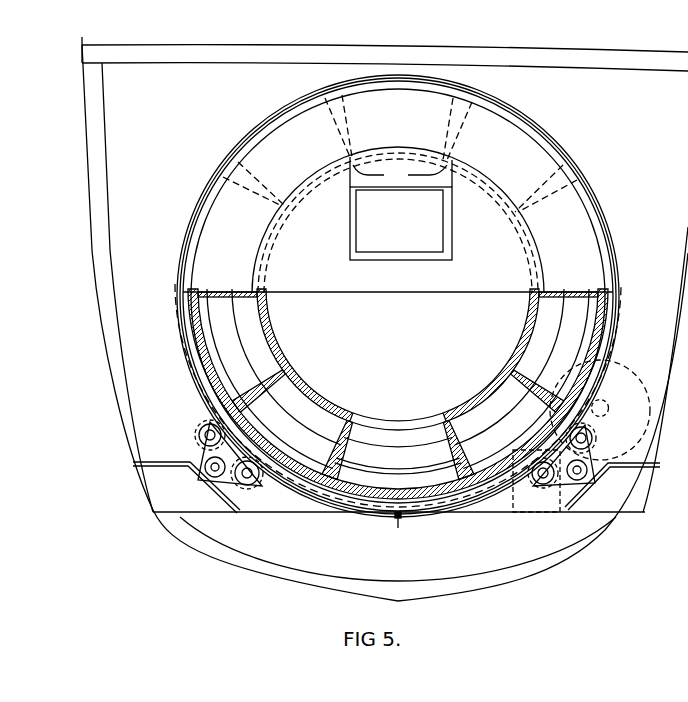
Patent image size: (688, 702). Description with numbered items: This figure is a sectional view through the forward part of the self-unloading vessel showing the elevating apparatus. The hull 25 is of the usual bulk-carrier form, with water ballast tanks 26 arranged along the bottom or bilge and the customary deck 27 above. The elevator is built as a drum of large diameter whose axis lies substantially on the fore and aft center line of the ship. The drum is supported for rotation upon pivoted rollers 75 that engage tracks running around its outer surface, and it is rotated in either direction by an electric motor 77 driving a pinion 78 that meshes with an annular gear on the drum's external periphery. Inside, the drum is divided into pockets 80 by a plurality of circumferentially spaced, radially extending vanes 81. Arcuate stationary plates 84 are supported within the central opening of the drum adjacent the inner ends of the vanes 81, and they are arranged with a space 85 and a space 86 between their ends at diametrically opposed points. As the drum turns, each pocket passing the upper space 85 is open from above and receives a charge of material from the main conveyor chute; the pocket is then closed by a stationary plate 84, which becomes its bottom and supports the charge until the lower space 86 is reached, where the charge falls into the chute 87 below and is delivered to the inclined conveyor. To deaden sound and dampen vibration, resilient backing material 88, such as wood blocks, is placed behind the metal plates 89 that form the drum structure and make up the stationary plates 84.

The hull 25 is at (82, 262).
The water ballast tanks 26 is at (320, 565).
The deck 27 is at (215, 45).
The pivoted rollers 75 is at (200, 430).
The electric motor 77 is at (508, 449).
The pinion 78 is at (607, 402).
The pockets 80 is at (302, 412).
The vanes 81 is at (356, 441).
The arcuate stationary plates 84 is at (265, 312).
The space 85 is at (410, 423).
The space 86 is at (400, 160).
The chute 87 is at (400, 174).
The resilient backing material 88 is at (520, 352).
The metal plates 89 is at (283, 377).